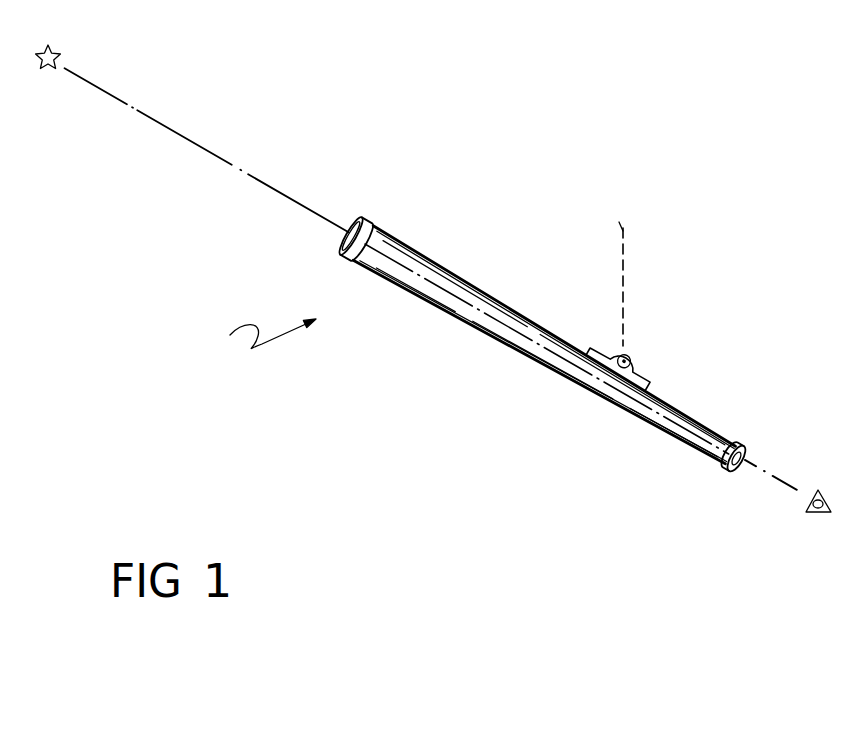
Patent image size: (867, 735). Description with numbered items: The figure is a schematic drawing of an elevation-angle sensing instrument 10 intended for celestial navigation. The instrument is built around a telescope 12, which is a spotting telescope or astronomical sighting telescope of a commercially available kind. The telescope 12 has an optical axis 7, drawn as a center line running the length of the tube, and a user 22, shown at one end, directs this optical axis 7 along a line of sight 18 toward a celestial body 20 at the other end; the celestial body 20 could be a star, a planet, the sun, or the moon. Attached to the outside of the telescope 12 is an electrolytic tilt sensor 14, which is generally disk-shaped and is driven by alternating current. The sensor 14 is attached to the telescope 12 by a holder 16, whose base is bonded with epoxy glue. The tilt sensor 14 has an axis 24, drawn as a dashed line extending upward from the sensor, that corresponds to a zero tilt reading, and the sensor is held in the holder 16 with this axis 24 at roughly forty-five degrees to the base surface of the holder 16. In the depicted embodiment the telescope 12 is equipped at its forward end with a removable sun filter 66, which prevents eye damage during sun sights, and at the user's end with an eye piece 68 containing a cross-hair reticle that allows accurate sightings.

The elevation-angle sensing instrument 10 is at (254, 334).
The telescope 12 is at (453, 268).
The optical axis 7 is at (540, 345).
The electrolytic tilt sensor 14 is at (630, 356).
The holder 16 is at (653, 383).
The line of sight 18 is at (237, 163).
The celestial body 20 is at (50, 45).
The user 22 is at (824, 492).
The axis 24 is at (624, 232).
The removable sun filter 66 is at (375, 220).
The eye piece 68 is at (740, 448).